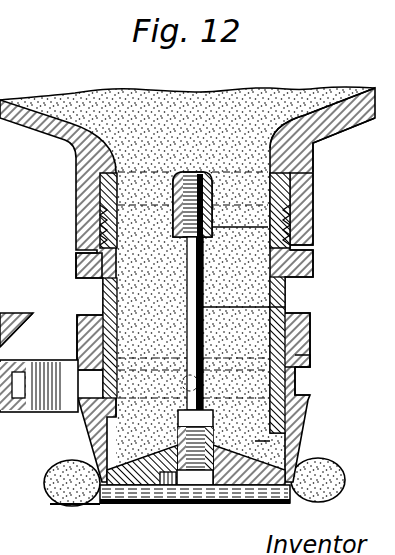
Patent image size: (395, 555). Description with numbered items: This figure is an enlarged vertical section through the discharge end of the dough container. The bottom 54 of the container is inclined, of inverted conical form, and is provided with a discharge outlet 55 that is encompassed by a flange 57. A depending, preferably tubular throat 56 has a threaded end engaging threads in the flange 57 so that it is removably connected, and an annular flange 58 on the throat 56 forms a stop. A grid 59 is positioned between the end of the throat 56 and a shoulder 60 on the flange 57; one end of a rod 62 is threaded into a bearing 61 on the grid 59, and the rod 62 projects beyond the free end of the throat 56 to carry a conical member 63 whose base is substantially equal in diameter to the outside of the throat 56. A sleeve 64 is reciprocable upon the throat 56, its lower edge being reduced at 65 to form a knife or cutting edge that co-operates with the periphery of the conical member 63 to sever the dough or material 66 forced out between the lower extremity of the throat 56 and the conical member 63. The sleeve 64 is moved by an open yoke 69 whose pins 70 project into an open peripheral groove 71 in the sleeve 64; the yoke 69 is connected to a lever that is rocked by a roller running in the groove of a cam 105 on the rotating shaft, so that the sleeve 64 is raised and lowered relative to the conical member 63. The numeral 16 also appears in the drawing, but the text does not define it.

The frame 16 is at (16, 302).
The bottom of the container 54 is at (73, 122).
The discharge outlet 55 is at (218, 132).
The throat 56 is at (287, 292).
The flange 57 is at (291, 205).
The annular flange 58 is at (314, 262).
The grid 59 is at (303, 180).
The shoulder 60 is at (314, 143).
The bearing 61 is at (292, 226).
The rod 62 is at (255, 305).
The conical member 63 is at (150, 488).
The sleeve 64 is at (302, 335).
The cutting edge 65 is at (75, 504).
The dough or material 66 is at (273, 100).
The open yoke 69 is at (52, 363).
The pins 70 is at (311, 358).
The open peripheral groove 71 is at (302, 383).
The cam 105 is at (30, 315).